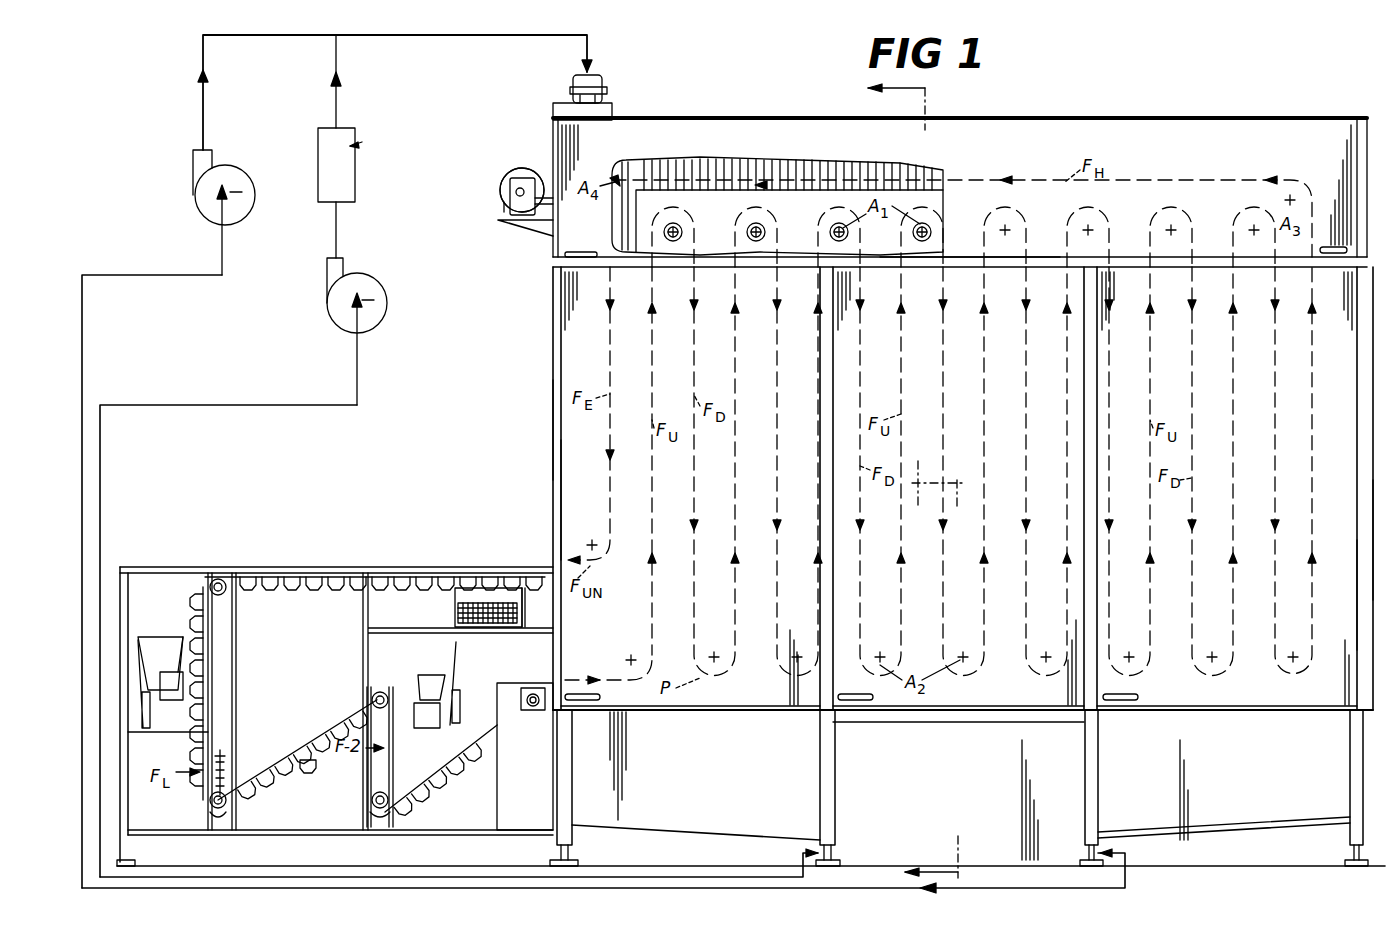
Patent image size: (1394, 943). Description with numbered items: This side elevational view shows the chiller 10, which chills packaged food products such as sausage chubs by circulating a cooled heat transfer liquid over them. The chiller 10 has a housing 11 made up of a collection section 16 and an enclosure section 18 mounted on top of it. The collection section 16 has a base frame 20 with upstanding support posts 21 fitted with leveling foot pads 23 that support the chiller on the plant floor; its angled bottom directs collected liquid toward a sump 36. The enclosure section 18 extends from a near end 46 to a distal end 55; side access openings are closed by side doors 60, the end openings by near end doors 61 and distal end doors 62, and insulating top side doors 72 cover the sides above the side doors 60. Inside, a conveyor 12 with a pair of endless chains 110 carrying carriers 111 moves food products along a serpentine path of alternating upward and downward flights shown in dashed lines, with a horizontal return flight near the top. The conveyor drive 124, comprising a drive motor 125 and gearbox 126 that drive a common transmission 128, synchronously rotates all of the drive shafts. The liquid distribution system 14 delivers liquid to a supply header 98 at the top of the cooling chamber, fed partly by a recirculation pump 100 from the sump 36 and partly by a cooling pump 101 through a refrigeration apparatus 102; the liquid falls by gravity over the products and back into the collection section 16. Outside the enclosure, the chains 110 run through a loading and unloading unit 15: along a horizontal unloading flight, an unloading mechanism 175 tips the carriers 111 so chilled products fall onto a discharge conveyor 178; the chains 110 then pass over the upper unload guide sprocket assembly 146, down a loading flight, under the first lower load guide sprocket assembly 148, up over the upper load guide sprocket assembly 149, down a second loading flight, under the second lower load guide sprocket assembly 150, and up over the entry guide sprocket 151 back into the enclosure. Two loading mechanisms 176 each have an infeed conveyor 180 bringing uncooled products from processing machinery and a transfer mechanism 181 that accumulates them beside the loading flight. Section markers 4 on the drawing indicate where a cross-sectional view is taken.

The chiller 10 is at (716, 88).
The housing 11 is at (1062, 118).
The enclosure section 18 is at (1200, 127).
The top side doors 72 is at (985, 160).
The section line 4- 4 is at (908, 481).
The supply header 98 is at (597, 84).
The recirculation pump 100 is at (243, 212).
The cooling pump 101 is at (385, 312).
The refrigeration apparatus 102 is at (355, 200).
The liquid distribution system 14 is at (385, 268).
The conveyor drive 124 is at (508, 190).
The drive motor 125 is at (530, 172).
The gearbox 126 is at (508, 207).
The common transmission 128 is at (733, 202).
The near end 46 is at (548, 430).
The near end doors 61 is at (552, 498).
The distal end 55 is at (1372, 536).
The distal end doors 62 is at (1370, 592).
The upstanding support posts 21 is at (570, 786).
The leveling foot pads 23 is at (1352, 864).
The collection section 16 is at (1235, 826).
The base frame 20 is at (1347, 836).
The sump 36 is at (986, 786).
The side doors 60 is at (722, 710).
The loading and unloading unit 15 is at (459, 548).
The unloading mechanism 175 is at (480, 576).
The upper unload guide sprocket assembly 146 is at (222, 580).
The first lower load guide sprocket assembly 148 is at (210, 802).
The carriers 111 is at (336, 573).
The conveyor 12 is at (322, 720).
The endless chains 110 is at (306, 756).
The upper load guide sprocket assembly 149 is at (368, 684).
The second lower load guide sprocket assembly 150 is at (368, 800).
The entry guide sprocket 151 is at (534, 690).
The discharge conveyor 178 is at (456, 604).
The transfer mechanism 181 is at (183, 637).
The loading mechanism 176 is at (162, 636).
The infeed conveyor 180 is at (176, 728).